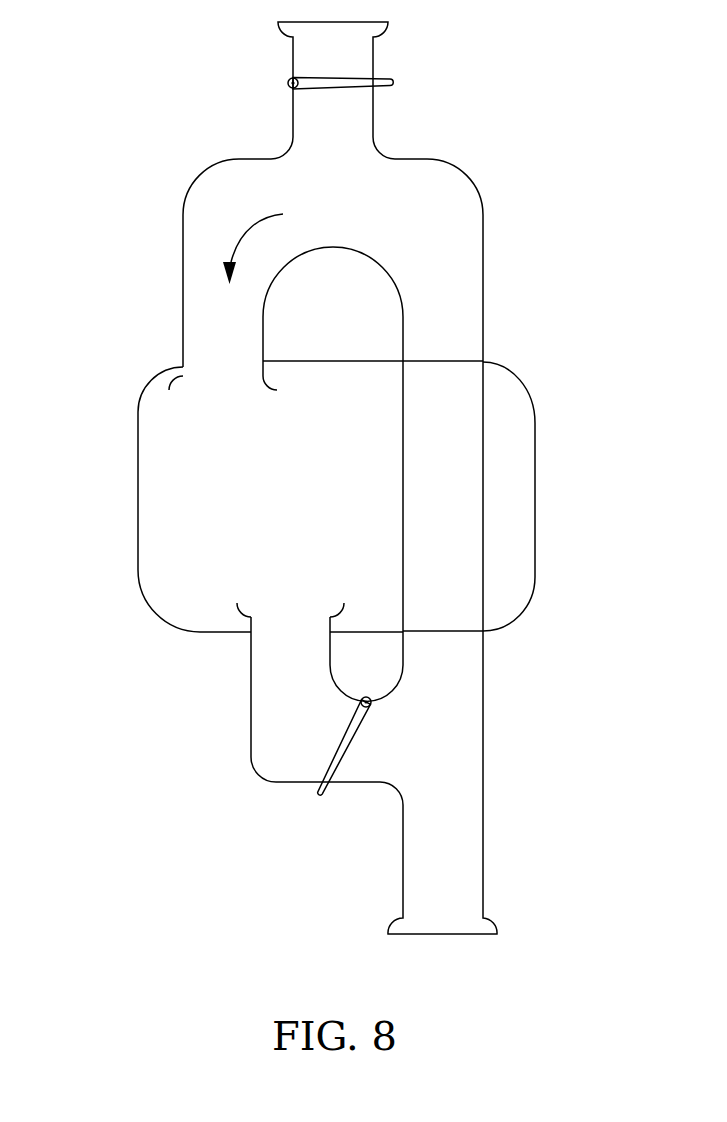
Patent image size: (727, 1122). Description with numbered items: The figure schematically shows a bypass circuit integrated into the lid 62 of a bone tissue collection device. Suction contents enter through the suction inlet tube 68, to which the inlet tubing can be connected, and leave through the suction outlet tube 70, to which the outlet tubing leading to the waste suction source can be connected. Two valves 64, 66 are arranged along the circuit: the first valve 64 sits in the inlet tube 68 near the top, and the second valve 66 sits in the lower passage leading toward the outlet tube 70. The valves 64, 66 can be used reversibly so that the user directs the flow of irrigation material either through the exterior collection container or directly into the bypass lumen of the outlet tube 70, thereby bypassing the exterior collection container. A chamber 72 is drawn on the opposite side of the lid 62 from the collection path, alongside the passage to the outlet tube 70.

The lid 62 is at (155, 497).
The valve 64 is at (400, 73).
The valve 66 is at (307, 802).
The suction inlet tube 68 is at (310, 64).
The suction outlet tube 70 is at (418, 872).
The right chamber 72 is at (467, 578).